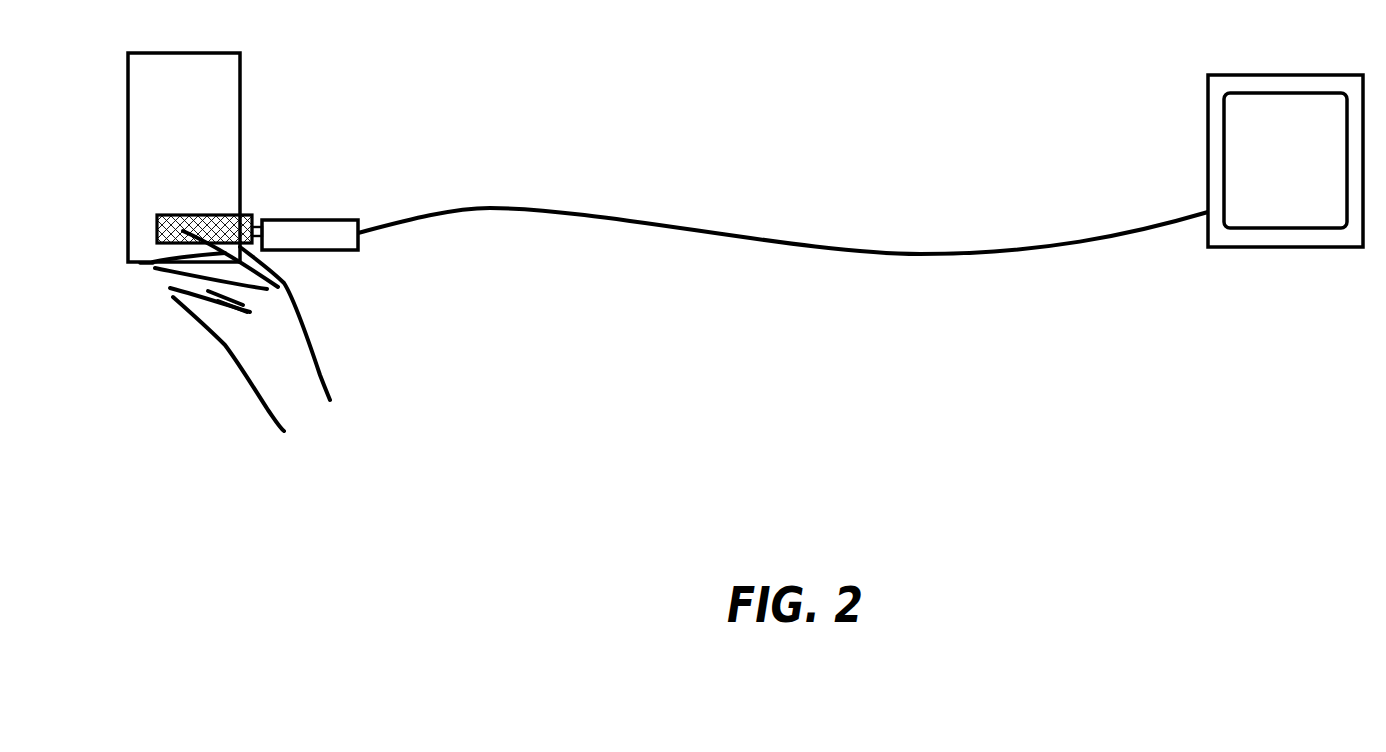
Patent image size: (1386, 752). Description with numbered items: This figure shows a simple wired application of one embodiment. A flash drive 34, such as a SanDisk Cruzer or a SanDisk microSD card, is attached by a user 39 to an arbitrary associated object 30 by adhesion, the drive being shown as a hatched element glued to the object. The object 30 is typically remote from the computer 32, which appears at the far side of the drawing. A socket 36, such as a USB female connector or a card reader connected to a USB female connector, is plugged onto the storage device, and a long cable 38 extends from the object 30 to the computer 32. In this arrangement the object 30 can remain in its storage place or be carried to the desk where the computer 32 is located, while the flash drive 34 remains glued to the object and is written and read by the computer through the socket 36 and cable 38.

The associated object 30 is at (240, 62).
The computer 32 is at (1208, 83).
The flash drive 34 is at (175, 213).
The socket 36 is at (312, 220).
The long cable 38 is at (488, 207).
The user 39 is at (300, 333).